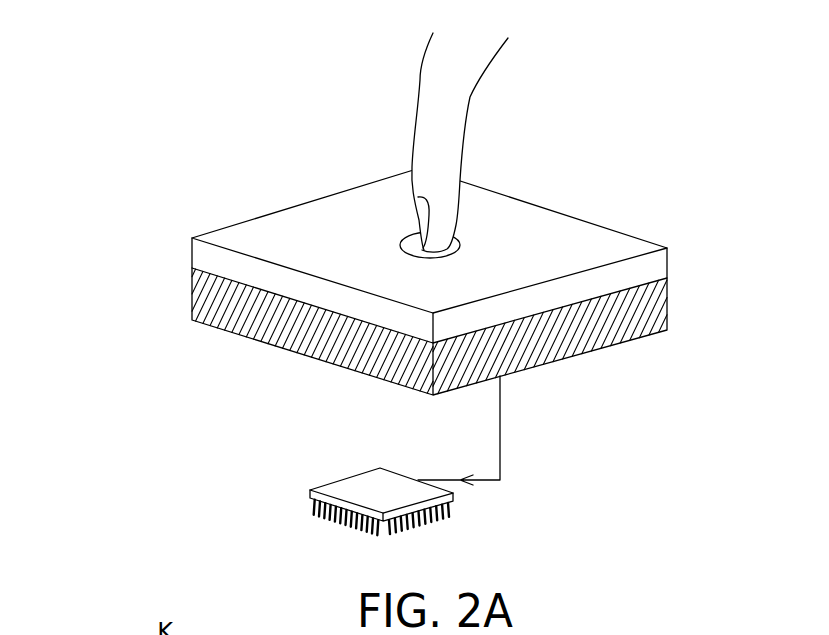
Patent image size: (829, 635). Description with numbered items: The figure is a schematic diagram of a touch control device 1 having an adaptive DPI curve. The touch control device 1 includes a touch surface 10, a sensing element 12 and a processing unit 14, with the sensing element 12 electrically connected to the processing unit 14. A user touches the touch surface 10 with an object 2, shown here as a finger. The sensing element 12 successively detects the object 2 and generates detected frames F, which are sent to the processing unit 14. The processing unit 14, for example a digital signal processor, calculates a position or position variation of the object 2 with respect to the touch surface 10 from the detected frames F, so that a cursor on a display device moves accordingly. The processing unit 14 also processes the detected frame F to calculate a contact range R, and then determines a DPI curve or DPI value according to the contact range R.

The touch control device 1 is at (242, 88).
The object 2 is at (453, 117).
The touch surface 10 is at (240, 235).
The sensing element 12 is at (217, 292).
The processing unit 14 is at (360, 483).
The contact range R is at (460, 238).
The detected frame F is at (459, 450).